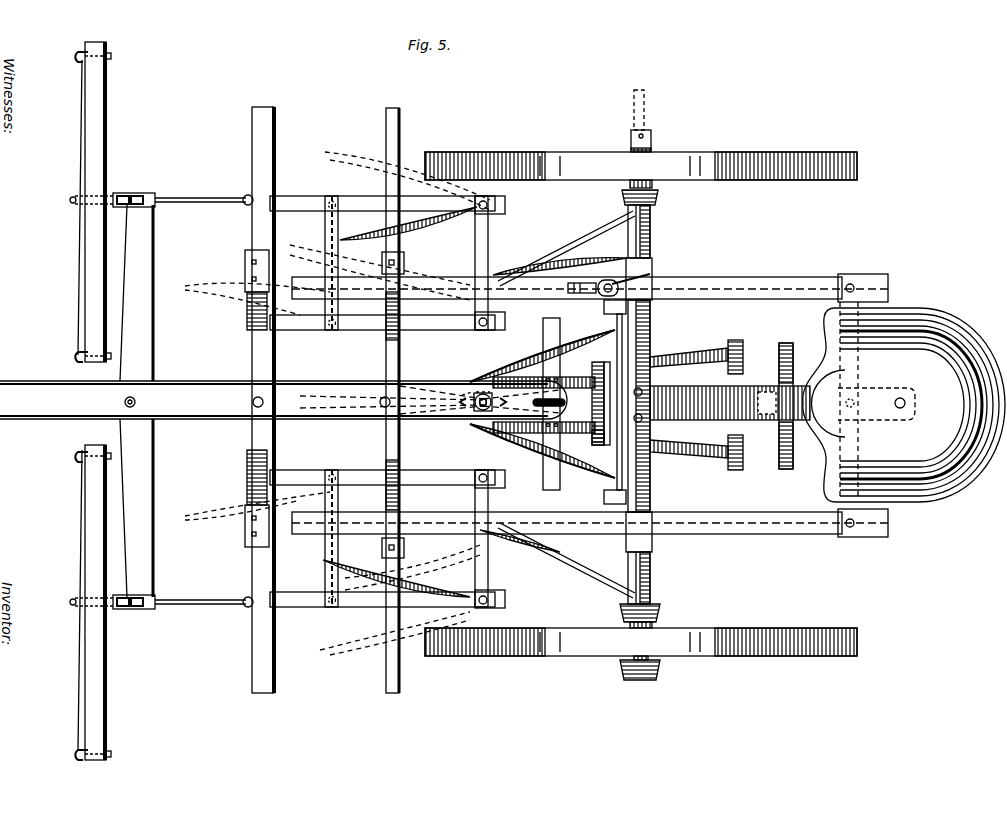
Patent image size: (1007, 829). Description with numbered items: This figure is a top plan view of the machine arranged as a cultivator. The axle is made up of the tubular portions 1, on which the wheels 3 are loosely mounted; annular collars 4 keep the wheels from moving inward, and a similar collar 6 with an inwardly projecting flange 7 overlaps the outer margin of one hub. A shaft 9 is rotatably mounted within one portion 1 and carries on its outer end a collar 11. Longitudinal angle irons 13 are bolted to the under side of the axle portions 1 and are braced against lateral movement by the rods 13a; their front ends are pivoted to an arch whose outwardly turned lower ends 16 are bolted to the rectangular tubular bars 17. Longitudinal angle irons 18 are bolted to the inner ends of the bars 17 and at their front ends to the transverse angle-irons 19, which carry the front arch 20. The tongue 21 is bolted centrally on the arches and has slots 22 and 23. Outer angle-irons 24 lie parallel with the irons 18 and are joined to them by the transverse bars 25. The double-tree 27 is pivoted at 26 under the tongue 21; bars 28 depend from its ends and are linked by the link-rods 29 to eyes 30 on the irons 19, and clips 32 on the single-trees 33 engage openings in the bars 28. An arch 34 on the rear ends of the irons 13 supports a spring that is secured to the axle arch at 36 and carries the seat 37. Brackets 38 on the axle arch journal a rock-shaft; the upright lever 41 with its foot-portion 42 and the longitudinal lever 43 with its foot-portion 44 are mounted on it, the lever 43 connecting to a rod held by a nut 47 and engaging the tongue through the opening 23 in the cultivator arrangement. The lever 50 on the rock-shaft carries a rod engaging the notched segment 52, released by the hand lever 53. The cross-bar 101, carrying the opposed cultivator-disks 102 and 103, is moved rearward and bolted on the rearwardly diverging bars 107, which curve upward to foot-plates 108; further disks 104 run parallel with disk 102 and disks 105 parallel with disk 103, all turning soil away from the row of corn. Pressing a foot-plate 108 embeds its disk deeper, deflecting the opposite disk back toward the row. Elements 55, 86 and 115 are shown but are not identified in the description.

The tubular portion of axle 1 is at (658, 578).
The wheel 3 is at (641, 404).
The annular collar 4 is at (664, 608).
The collar 6 is at (632, 682).
The annular flange 7 is at (660, 665).
The shaft 9 is at (644, 95).
The collar 11 is at (651, 134).
The angle iron 13 is at (590, 405).
The brace rod 13a is at (566, 404).
The outwardly-turned arch end 16 is at (410, 545).
The tubular bar 17 is at (388, 700).
The longitudinal angle iron 18 is at (382, 400).
The transverse angle-iron 19 is at (258, 700).
The front arch 20 is at (257, 398).
The tongue 21 is at (283, 400).
The slot 22 is at (545, 405).
The slot 23 is at (470, 406).
The outer angle-iron 24 is at (382, 402).
The transverse bar 25 is at (325, 573).
The double-tree pivot 26 is at (121, 399).
The double-tree 27 is at (136, 401).
The depending bar 28 is at (120, 618).
The link-rod 29 is at (200, 400).
The eye 30 is at (240, 614).
The clip 32 is at (115, 584).
The single-tree 33 is at (80, 401).
The arch 34 is at (838, 305).
The spring attachment 36 is at (642, 420).
The seat 37 is at (904, 405).
The bracket 38 is at (596, 497).
The lever 41 is at (601, 394).
The foot-portion 42 is at (593, 447).
The lever 43 is at (544, 405).
The foot-portion 44 is at (785, 415).
The nut 47 is at (483, 412).
The lever 50 is at (650, 274).
The segment 52 is at (584, 283).
The hand lever 53 is at (608, 280).
The shaft 55 is at (730, 403).
The spring 86 is at (542, 408).
The cross-bar 101 is at (557, 404).
The cutting-disk 102 is at (400, 425).
The cutting-disk 103 is at (400, 380).
The cutting-disk 104 is at (473, 435).
The cutting-disk 105 is at (422, 370).
The diverging bar 107 is at (696, 458).
The foot-plate 108 is at (738, 476).
The pin 115 is at (483, 393).